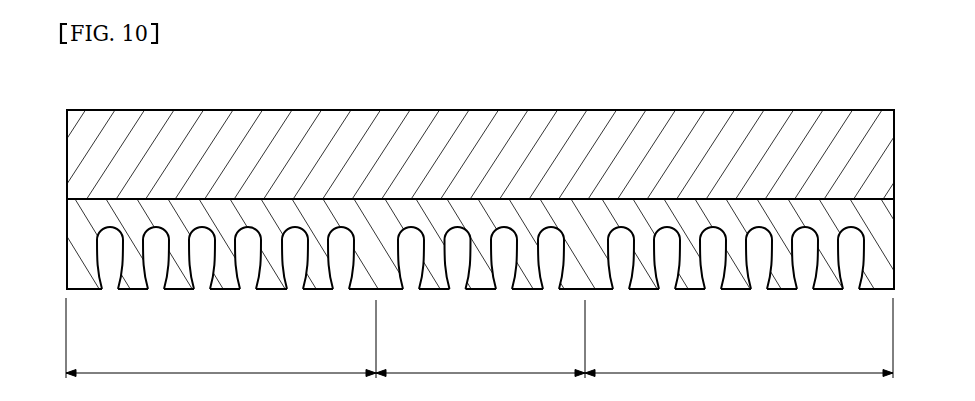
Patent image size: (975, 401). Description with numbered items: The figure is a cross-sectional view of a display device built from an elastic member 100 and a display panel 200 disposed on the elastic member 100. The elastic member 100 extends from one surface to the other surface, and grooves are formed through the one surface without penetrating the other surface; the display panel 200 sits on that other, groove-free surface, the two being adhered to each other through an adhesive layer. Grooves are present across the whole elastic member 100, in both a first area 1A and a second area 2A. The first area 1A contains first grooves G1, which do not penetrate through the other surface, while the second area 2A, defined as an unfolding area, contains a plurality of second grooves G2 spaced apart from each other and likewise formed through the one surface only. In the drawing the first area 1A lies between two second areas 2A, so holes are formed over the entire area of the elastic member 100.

The display panel 200 is at (67, 155).
The elastic member 100 is at (67, 244).
The first groove G1 is at (416, 263).
The second groove G2 is at (346, 263).
The first area 1A is at (480, 350).
The second area 2A is at (479, 349).